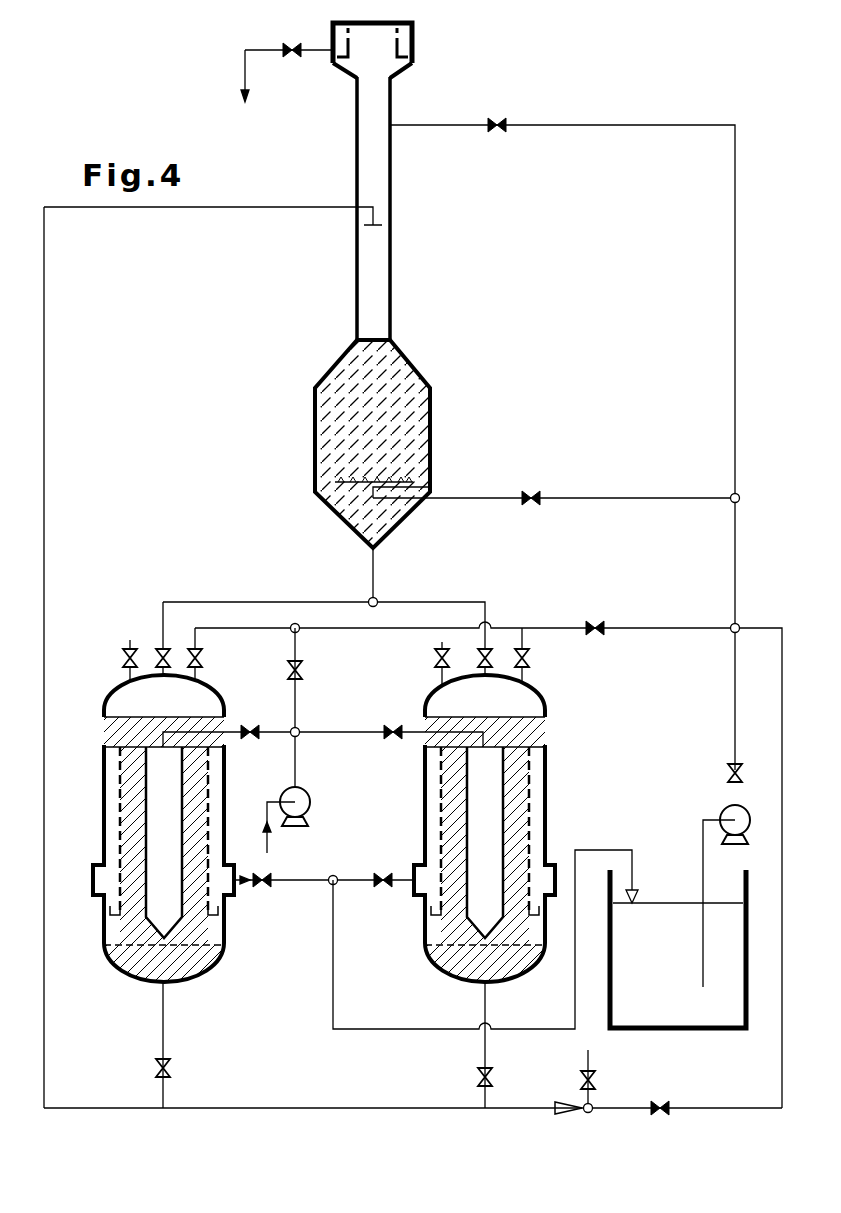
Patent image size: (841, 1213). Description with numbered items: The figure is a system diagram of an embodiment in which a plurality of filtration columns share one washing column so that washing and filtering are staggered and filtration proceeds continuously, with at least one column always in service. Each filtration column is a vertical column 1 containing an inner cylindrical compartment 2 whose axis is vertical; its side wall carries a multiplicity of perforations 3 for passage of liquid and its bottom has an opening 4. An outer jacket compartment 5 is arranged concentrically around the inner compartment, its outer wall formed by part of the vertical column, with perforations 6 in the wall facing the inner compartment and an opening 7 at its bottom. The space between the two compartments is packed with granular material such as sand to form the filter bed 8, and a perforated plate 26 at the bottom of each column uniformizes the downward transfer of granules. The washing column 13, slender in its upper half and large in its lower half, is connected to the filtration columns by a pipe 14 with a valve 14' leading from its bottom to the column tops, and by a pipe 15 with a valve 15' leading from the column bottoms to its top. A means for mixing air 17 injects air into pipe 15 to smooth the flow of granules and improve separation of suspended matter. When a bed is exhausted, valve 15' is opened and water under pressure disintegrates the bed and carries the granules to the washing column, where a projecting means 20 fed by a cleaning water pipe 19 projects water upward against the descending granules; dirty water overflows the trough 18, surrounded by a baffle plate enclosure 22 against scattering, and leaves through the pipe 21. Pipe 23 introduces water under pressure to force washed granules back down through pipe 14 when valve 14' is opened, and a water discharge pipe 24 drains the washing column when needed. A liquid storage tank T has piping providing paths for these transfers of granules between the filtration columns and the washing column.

The vertical column 1 is at (102, 700).
The inner cylindrical compartment 2 is at (152, 795).
The perforations 3 is at (138, 768).
The opening 4 is at (173, 953).
The outer jacket compartment 5 is at (110, 840).
The perforations 6 is at (118, 823).
The opening 7 is at (112, 912).
The filter bed 8 is at (200, 920).
The washing column 13 is at (315, 400).
The pipe 14 is at (324, 599).
The valve 14' is at (335, 627).
The pipe 15 is at (413, 1082).
The valve 15' is at (355, 1045).
The means for mixing air 17 is at (341, 1106).
The overflow trough 18 is at (412, 48).
The cleaning water pipe 19 is at (619, 496).
The projecting means 20 is at (345, 490).
The pipe 21 is at (246, 72).
The baffle plate enclosure 22 is at (348, 52).
The pipe 23 is at (580, 122).
The water discharge pipe 24 is at (267, 204).
The perforated plate 26 is at (132, 948).
The liquid storage tank T is at (684, 1030).